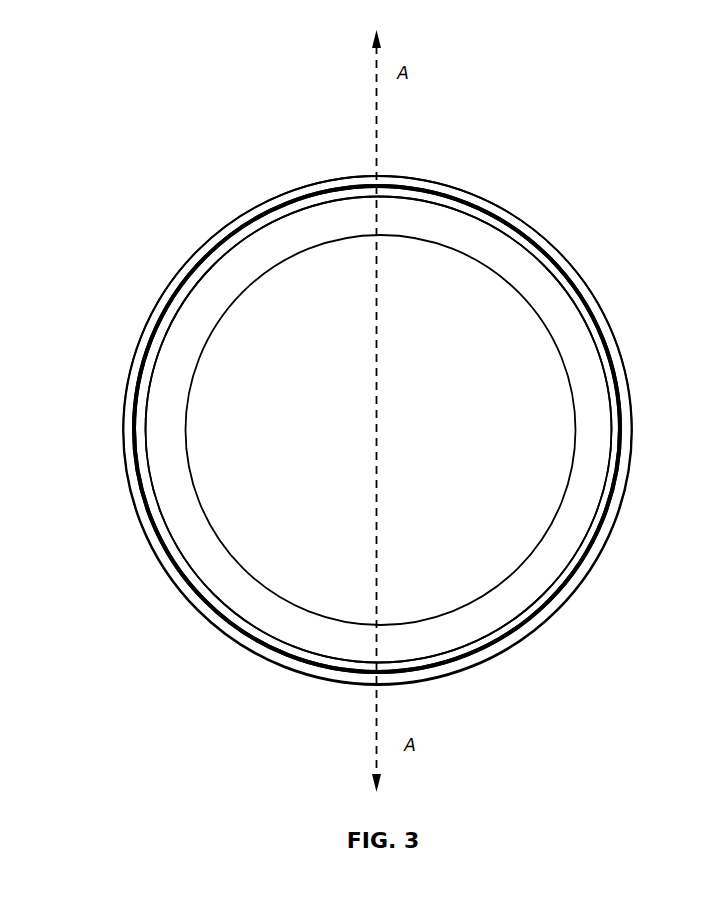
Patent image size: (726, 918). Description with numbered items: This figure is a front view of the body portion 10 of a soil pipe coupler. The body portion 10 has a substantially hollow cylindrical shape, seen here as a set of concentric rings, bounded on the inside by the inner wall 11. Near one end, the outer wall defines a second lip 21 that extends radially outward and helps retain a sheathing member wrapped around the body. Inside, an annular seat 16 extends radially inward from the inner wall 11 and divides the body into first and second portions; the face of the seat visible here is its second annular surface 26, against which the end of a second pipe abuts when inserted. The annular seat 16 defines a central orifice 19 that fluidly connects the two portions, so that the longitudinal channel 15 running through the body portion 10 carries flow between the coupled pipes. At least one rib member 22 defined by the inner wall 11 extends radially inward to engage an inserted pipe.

The body portion 10 is at (173, 195).
The inner wall 11 is at (377, 429).
The channel 15 is at (245, 333).
The annular seat 16 is at (545, 303).
The orifice 19 is at (447, 452).
The second lip 21 is at (425, 430).
The rib member 22 is at (416, 429).
The second annular surface 26 is at (379, 382).